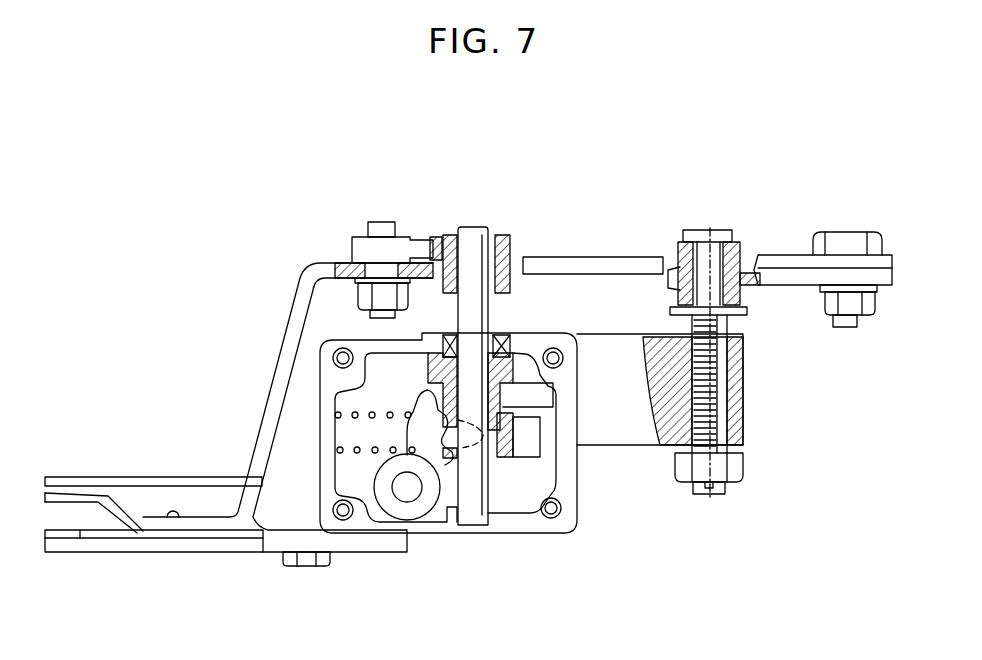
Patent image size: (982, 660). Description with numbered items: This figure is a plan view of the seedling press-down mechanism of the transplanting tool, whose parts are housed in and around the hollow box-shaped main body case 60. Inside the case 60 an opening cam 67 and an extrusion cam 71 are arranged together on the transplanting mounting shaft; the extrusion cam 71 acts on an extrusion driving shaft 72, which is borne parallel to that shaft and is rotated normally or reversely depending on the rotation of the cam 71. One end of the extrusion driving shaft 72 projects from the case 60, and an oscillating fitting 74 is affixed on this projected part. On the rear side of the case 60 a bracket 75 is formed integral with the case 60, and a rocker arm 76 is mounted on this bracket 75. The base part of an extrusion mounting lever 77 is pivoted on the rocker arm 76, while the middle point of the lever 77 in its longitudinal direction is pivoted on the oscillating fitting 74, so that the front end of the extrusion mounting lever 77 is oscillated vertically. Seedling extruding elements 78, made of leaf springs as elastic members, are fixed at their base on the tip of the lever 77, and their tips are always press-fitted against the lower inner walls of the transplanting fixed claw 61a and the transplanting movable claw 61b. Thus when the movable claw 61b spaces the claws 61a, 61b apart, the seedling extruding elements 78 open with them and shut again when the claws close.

The main body case 60 is at (445, 533).
The transplanting fixed claw 61a is at (200, 552).
The transplanting movable claw 61b is at (198, 477).
The opening cam 67 is at (527, 457).
The extrusion cam 71 is at (548, 405).
The extrusion driving shaft 72 is at (473, 240).
The oscillating fitting 74 is at (365, 245).
The bracket 75 is at (633, 445).
The rocker arm 76 is at (793, 281).
The extrusion mounting lever 77 is at (600, 257).
The seedling extruding element 78 is at (108, 500).